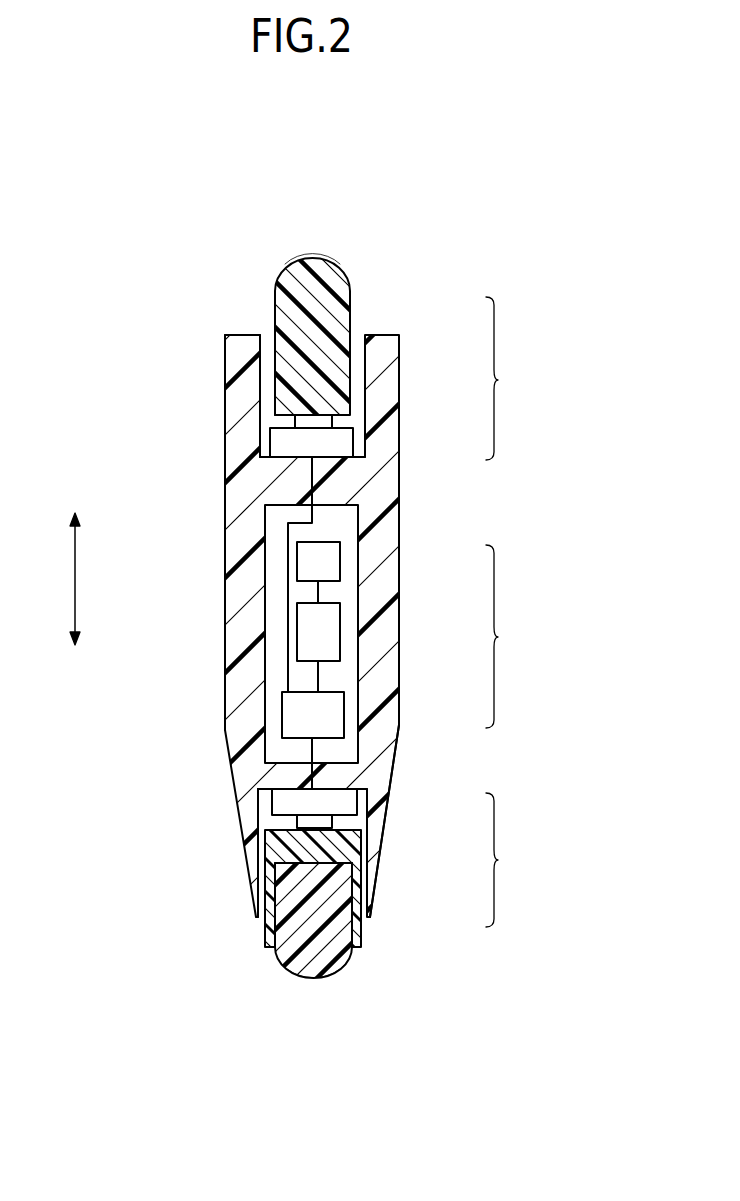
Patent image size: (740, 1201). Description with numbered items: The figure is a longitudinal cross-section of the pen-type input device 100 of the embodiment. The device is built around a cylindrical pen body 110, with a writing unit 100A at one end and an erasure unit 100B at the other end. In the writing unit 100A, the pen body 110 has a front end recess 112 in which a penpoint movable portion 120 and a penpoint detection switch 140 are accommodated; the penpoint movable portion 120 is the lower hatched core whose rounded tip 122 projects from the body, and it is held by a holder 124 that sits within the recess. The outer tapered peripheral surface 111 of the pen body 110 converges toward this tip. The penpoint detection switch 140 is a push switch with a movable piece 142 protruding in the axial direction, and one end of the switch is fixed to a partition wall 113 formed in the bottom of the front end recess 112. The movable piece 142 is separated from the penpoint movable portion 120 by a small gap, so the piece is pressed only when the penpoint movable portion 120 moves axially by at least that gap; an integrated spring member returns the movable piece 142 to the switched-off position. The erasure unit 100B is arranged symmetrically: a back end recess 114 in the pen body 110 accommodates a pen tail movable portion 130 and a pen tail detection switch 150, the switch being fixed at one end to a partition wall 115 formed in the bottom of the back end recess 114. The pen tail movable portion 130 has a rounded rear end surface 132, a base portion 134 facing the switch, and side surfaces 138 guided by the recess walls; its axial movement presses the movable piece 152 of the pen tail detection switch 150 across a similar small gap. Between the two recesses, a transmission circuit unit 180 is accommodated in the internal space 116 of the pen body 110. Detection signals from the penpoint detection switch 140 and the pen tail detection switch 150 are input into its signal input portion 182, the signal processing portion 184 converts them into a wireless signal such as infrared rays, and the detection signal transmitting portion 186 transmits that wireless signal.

The pen-type input device 100 is at (420, 139).
The writing unit 100A is at (356, 899).
The erasure unit 100B is at (355, 327).
The pen body 110 is at (226, 483).
The tapered outer peripheral surface 111 is at (373, 893).
The front end recess 112 is at (260, 862).
The partition wall 113 is at (328, 778).
The back end recess 114 is at (262, 350).
The partition wall 115 is at (343, 484).
The internal space 116 is at (280, 624).
The penpoint movable portion 120 is at (354, 967).
The pen tip 122 is at (316, 980).
The core holder 124 is at (292, 848).
The pen tail movable portion 130 is at (343, 314).
The rear end surface 132 is at (305, 258).
The base portion of rear end member 134 is at (275, 383).
The side surface of rear end member 138 is at (315, 398).
The penpoint detection switch 140 is at (343, 806).
The movable piece 142 is at (296, 822).
The pen tail detection switch 150 is at (343, 445).
The movable piece 152 is at (295, 422).
The transmission circuit unit 180 is at (404, 634).
The signal input portion 182 is at (328, 715).
The signal processing portion 184 is at (328, 630).
The detection signal transmitting portion 186 is at (328, 560).